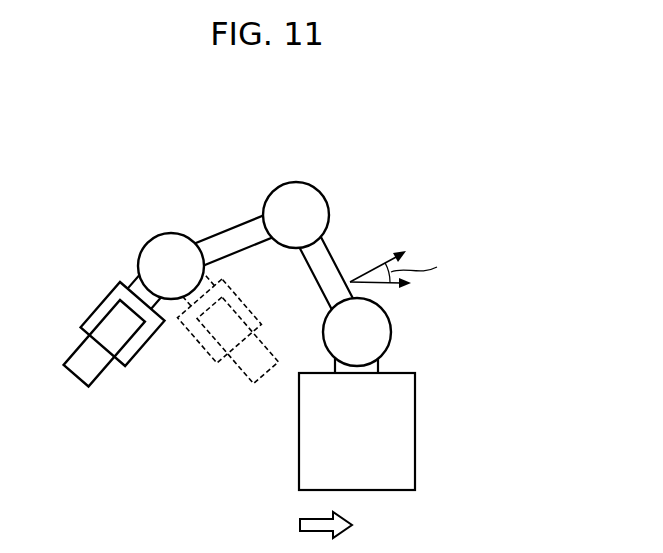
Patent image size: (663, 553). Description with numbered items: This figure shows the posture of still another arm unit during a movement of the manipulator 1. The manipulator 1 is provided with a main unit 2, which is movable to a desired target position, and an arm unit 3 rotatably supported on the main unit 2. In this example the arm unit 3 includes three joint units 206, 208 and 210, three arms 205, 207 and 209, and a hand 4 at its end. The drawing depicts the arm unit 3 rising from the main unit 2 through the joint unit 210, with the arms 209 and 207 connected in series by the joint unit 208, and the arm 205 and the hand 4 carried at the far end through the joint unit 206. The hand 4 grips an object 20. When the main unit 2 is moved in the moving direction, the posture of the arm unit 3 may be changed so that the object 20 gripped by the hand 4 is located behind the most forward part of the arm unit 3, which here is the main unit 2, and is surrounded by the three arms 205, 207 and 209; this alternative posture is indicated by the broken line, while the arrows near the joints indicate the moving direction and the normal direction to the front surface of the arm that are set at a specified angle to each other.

The manipulator 1 is at (446, 463).
The main unit 2 is at (415, 408).
The arm unit 3 is at (458, 134).
The hand 4 is at (87, 316).
The object 20 is at (88, 367).
The arm 205 is at (136, 281).
The joint unit 206 is at (163, 233).
The arm 207 is at (228, 218).
The joint unit 208 is at (290, 182).
The arm 209 is at (334, 255).
The joint unit 210 is at (392, 332).